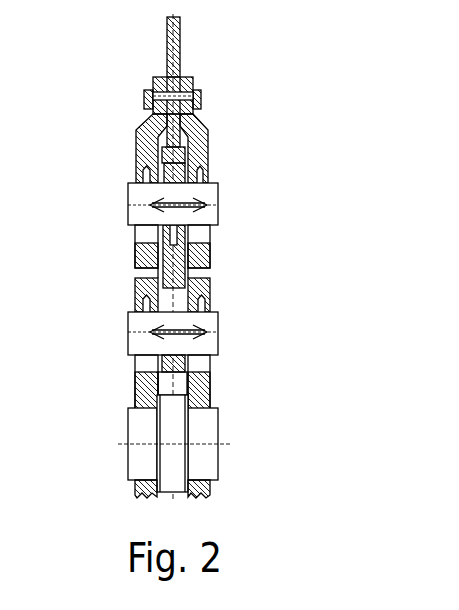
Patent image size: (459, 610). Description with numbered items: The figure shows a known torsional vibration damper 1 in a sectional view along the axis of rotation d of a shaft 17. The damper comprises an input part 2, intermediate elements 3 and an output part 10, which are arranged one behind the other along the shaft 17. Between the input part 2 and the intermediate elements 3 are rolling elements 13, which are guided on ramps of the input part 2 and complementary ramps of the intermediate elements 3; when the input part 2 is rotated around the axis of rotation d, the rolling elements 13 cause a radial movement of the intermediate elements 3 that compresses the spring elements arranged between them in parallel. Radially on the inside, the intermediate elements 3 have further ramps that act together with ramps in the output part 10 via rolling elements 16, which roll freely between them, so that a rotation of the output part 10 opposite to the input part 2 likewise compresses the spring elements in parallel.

The torsional vibration damper 1 is at (94, 125).
The input part 2 is at (208, 140).
The intermediate elements 3 is at (210, 248).
The output part 10 is at (210, 285).
The rolling elements 13 is at (218, 186).
The rolling elements 16 is at (218, 345).
The shaft 17 is at (208, 423).
The axis of rotation d is at (222, 444).